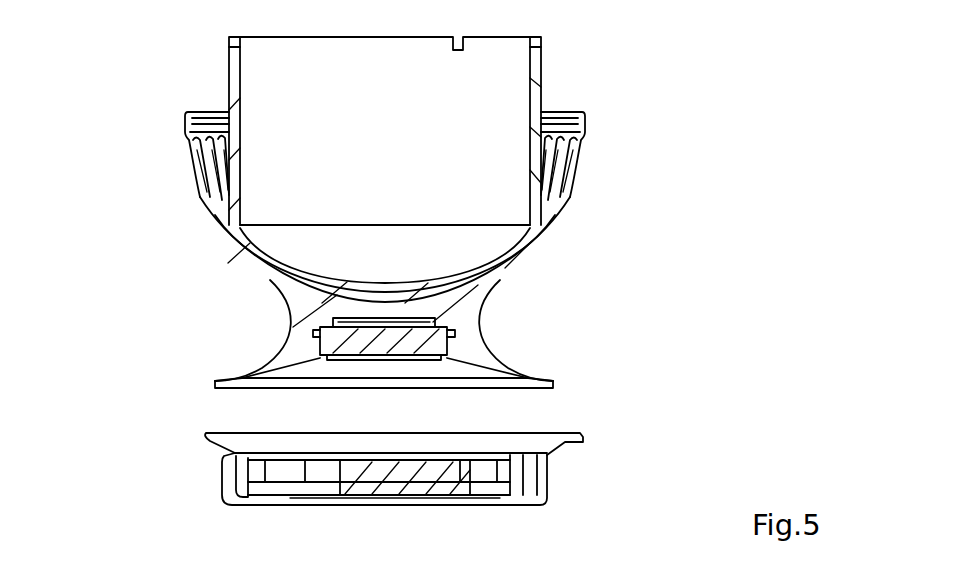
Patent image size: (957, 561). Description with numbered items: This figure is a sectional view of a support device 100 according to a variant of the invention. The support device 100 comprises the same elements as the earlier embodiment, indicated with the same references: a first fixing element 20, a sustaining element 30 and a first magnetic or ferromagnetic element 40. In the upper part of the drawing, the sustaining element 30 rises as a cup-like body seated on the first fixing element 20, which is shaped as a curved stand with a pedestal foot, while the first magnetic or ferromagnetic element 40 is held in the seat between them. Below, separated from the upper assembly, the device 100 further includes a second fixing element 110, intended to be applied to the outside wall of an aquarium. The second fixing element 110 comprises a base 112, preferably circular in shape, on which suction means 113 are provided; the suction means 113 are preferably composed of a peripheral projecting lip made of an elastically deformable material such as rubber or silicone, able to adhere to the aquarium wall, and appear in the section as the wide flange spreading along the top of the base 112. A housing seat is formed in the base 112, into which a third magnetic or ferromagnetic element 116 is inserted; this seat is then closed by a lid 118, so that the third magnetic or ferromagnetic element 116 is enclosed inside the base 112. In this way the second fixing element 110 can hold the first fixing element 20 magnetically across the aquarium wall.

The support device 100 is at (120, 195).
The sustaining element 30 is at (546, 82).
The first magnetic or ferromagnetic element 40 is at (487, 235).
The first fixing element 20 is at (487, 308).
The second fixing element 110 is at (203, 462).
The suction means 113 is at (573, 429).
The base 112 is at (543, 470).
The third magnetic or ferromagnetic element 116 is at (457, 472).
The lid 118 is at (481, 494).